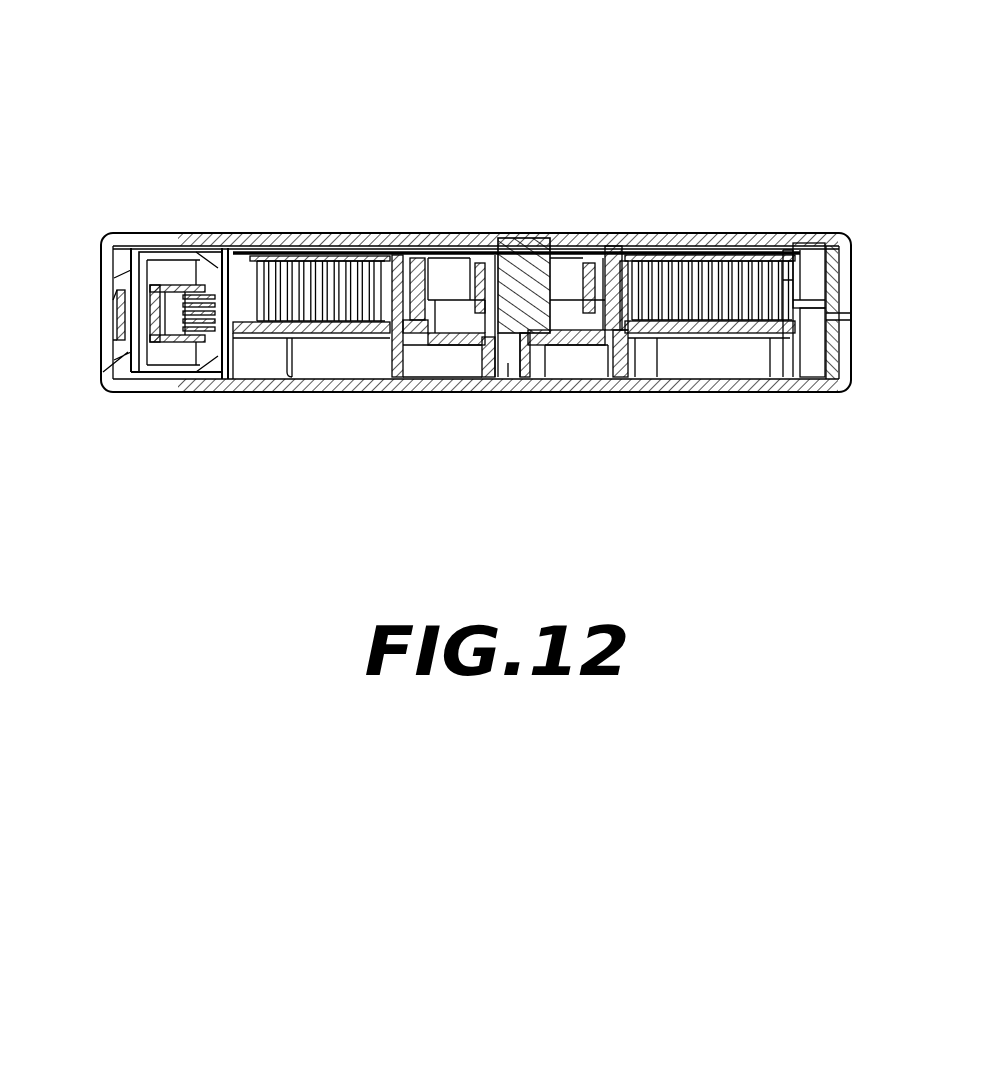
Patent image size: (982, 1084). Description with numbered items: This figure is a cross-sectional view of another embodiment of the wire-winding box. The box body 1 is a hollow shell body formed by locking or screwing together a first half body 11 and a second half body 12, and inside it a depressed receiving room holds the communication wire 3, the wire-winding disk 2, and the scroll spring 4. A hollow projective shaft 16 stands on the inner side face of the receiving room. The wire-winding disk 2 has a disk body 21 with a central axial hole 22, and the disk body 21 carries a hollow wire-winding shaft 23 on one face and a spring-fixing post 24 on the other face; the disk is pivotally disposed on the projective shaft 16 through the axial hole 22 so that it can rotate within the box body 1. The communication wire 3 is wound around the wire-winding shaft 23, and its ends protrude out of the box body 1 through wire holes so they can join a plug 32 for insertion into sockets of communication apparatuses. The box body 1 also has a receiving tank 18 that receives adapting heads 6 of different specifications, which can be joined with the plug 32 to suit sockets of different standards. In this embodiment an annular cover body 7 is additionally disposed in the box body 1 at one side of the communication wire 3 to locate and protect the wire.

The box body 1 is at (168, 208).
The wire-winding disk 2 is at (341, 350).
The communication wire 3 is at (700, 237).
The scroll spring 4 is at (687, 365).
The adapting head 6 is at (180, 385).
The annular cover body 7 is at (306, 236).
The first half body 11 is at (803, 385).
The second half body 12 is at (795, 237).
The projective shaft 16 is at (510, 366).
The receiving tank 18 is at (103, 367).
The disk body 21 is at (752, 378).
The central axial hole 22 is at (467, 385).
The wire-winding shaft 23 is at (616, 237).
The spring-fixing post 24 is at (618, 378).
The plug 32 is at (521, 237).